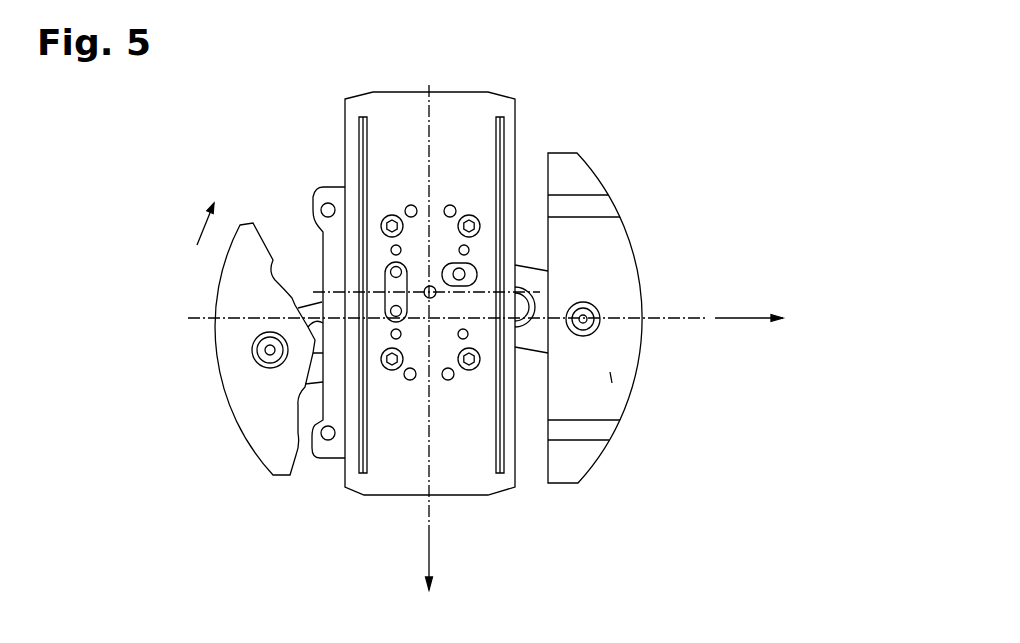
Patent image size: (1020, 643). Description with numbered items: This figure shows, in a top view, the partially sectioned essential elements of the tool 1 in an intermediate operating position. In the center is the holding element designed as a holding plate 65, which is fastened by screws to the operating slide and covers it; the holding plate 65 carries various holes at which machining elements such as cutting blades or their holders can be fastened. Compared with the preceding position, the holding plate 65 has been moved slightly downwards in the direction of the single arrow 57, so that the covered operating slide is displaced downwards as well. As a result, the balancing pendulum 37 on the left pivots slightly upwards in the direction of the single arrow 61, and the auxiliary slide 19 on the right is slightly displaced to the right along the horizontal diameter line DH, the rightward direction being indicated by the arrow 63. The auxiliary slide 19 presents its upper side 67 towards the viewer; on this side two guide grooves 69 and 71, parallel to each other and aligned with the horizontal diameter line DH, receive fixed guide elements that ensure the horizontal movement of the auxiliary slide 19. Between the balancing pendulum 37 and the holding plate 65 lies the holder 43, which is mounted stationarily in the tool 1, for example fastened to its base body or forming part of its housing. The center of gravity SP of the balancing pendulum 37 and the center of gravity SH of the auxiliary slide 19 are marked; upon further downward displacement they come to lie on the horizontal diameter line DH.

The tool 1 is at (294, 136).
The auxiliary slide 19 is at (584, 156).
The balancing pendulum 37 is at (228, 420).
The holder 43 is at (316, 195).
The single arrow 57 is at (430, 550).
The single arrow 61 is at (200, 228).
The arrow 63 is at (745, 318).
The holding plate 65 is at (482, 80).
The upper side 67 is at (610, 372).
The guide groove 69 is at (601, 206).
The guide groove 71 is at (608, 428).
The center of gravity of the balancing pendulum SP is at (268, 351).
The center of gravity of the auxiliary slide SH is at (591, 304).
The horizontal diameter line DH is at (669, 318).